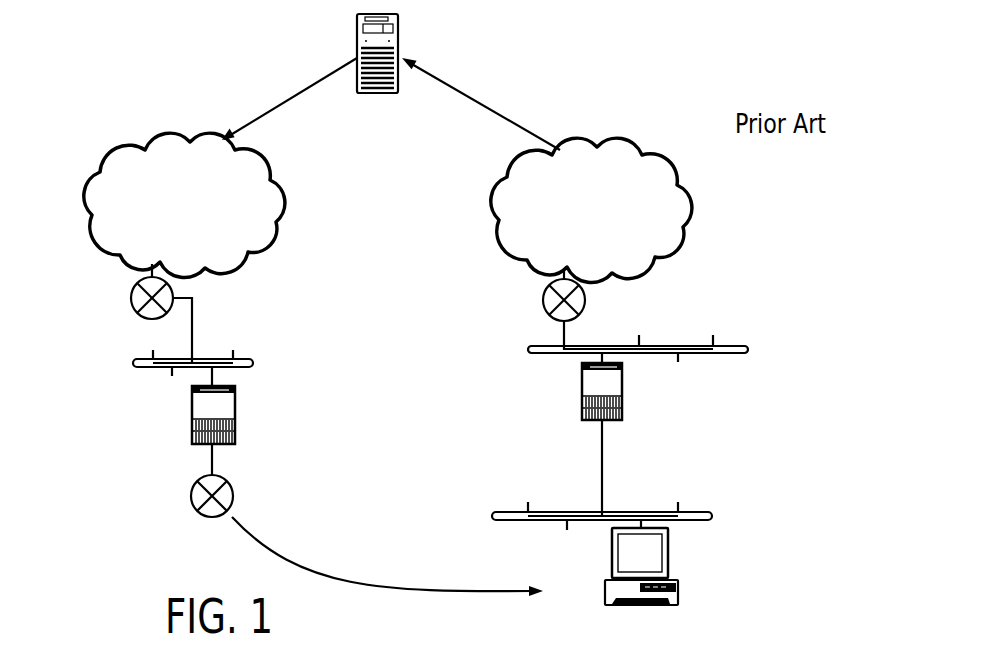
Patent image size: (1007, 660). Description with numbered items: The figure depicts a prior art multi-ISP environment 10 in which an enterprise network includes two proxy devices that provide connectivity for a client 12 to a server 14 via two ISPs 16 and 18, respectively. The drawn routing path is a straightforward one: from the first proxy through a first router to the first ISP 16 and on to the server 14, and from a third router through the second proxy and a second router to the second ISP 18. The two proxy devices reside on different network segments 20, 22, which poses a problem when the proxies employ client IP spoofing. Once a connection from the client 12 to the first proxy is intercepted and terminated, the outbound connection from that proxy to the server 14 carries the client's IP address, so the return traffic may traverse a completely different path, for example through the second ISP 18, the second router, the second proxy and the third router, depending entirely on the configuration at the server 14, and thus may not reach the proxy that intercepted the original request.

The multi-ISP environment 10 is at (542, 33).
The client 12 is at (640, 581).
The server 14 is at (377, 72).
The ISP 16 is at (598, 244).
The ISP 18 is at (191, 232).
The network segment 20 is at (769, 402).
The network segment 22 is at (57, 440).